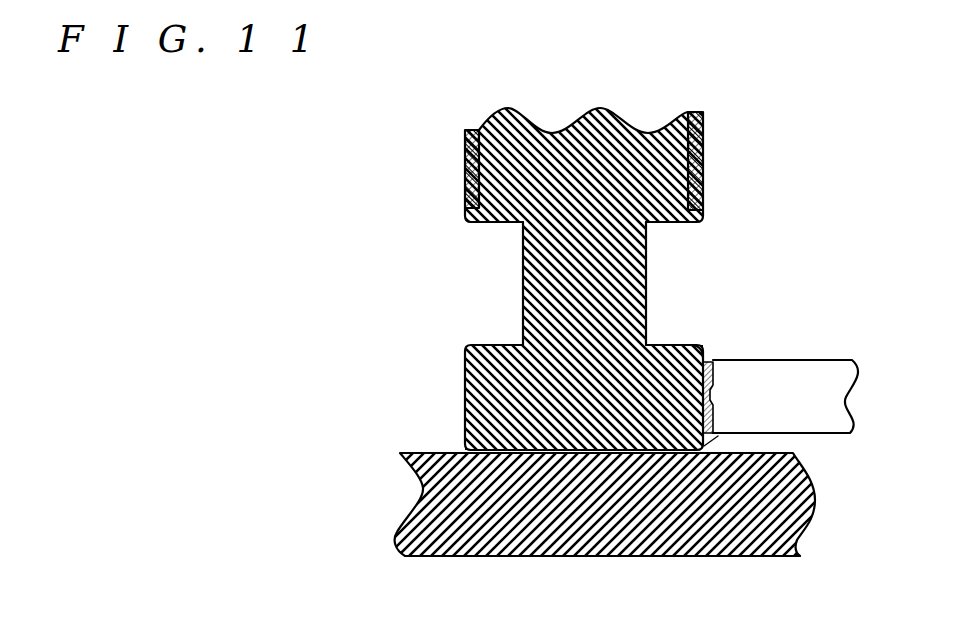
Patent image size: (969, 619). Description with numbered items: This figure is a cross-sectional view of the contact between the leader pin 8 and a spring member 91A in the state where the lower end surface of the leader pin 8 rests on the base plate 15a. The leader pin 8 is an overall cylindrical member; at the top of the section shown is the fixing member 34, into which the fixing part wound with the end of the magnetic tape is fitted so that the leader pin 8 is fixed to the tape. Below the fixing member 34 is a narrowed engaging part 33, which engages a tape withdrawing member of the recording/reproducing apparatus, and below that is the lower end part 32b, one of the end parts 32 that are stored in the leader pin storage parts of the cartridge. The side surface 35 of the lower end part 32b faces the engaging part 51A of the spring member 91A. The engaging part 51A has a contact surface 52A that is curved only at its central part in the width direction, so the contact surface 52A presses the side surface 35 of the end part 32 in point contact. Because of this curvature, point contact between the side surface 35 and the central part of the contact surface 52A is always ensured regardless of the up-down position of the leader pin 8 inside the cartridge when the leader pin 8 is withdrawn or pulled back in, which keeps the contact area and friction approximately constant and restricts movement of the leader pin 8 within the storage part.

The leader pin 8 is at (390, 245).
The fixing member 34 is at (465, 166).
The engaging part 33 is at (523, 288).
The end part 32 is at (493, 397).
The lower end part 32b is at (465, 407).
The contact surface 52A is at (688, 347).
The engaging part 51A is at (713, 394).
The side surface 35 is at (733, 434).
The spring member 91A is at (832, 362).
The case wall 15a is at (420, 492).